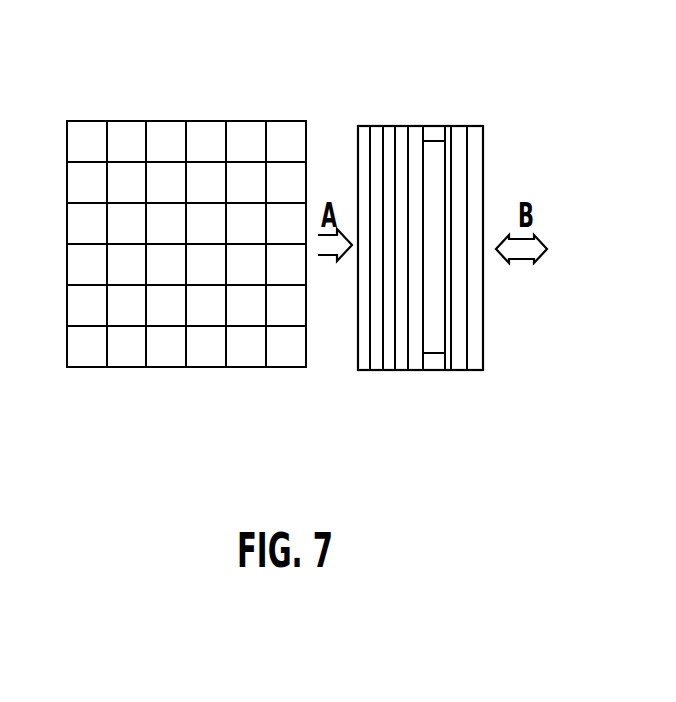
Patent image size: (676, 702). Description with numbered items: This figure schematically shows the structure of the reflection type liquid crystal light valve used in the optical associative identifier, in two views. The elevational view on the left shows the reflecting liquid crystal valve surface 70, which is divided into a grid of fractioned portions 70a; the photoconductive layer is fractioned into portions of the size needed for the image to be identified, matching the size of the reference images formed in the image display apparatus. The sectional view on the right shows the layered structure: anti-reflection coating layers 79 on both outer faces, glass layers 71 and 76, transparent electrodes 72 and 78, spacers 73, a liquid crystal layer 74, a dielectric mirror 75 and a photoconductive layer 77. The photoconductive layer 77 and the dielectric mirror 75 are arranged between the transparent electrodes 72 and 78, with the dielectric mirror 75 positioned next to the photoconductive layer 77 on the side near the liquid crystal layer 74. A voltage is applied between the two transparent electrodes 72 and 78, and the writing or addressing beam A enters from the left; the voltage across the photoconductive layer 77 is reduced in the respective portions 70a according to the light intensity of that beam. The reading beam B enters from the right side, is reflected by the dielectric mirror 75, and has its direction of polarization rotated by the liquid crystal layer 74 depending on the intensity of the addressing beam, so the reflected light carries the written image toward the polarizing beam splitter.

The reflecting liquid crystal valve surface 70 is at (88, 113).
The fractioned portions 70a is at (89, 358).
The glass layer 71 is at (463, 370).
The transparent electrode 72 is at (450, 133).
The spacers 73 is at (435, 135).
The liquid crystal layer 74 is at (437, 175).
The dielectric mirror 75 is at (417, 133).
The glass layer 76 is at (382, 370).
The photoconductive layer 77 is at (403, 370).
The transparent electrode 78 is at (389, 133).
The anti-reflection coating layers 79 is at (363, 370).